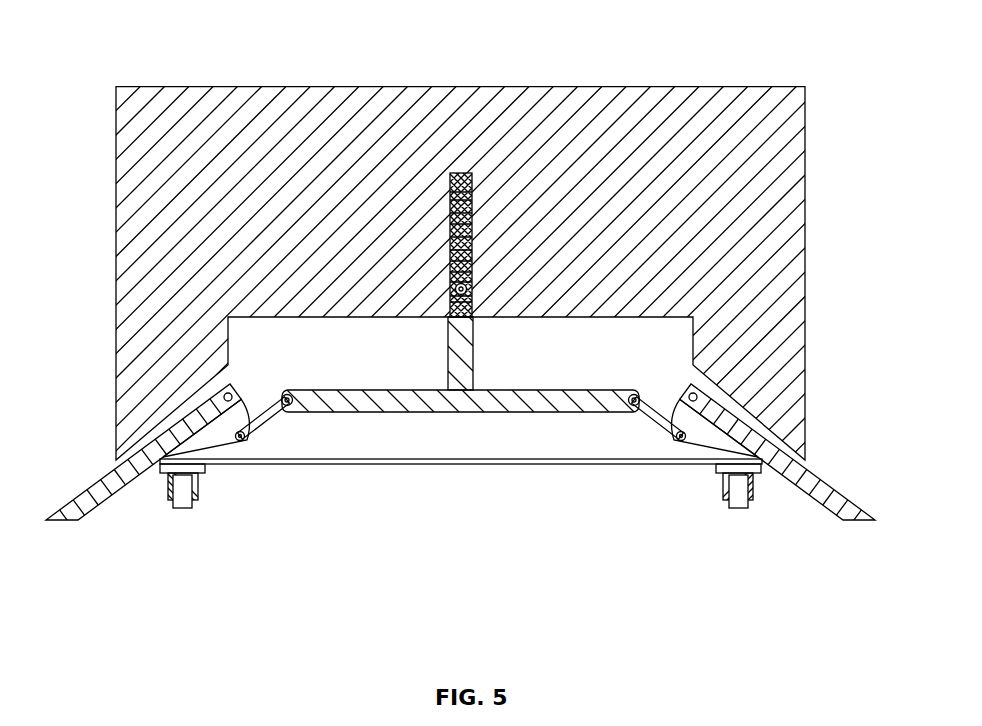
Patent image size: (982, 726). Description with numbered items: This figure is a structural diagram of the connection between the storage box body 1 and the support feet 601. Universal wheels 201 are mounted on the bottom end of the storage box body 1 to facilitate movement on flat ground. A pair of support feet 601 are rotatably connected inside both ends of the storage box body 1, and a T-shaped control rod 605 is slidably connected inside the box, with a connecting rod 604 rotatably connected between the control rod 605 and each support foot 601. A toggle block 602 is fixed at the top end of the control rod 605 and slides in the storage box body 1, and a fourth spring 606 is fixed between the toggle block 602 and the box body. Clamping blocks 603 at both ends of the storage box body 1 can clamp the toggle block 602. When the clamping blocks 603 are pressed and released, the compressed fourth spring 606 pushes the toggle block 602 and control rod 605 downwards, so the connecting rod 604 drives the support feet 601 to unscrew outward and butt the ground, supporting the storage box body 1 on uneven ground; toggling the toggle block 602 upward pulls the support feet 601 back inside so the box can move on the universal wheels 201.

The storage box body 1 is at (572, 108).
The universal wheels 201 is at (742, 490).
The support feet 601 is at (832, 503).
The toggle block 602 is at (475, 316).
The clamping block 603 is at (462, 178).
The connecting rod 604 is at (658, 415).
The control rod 605 is at (457, 398).
The fourth spring 606 is at (455, 293).